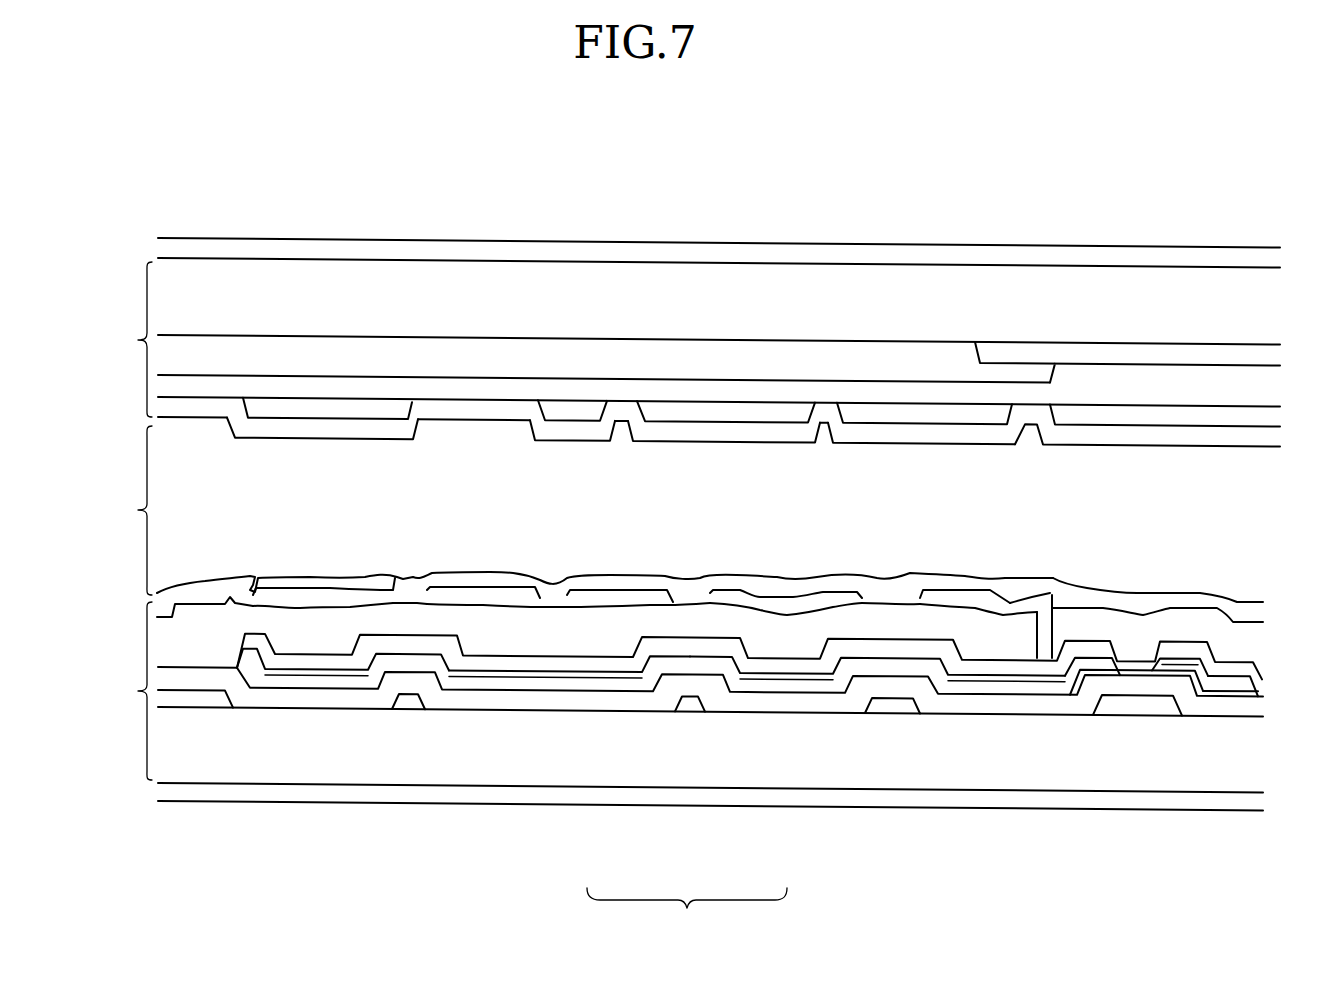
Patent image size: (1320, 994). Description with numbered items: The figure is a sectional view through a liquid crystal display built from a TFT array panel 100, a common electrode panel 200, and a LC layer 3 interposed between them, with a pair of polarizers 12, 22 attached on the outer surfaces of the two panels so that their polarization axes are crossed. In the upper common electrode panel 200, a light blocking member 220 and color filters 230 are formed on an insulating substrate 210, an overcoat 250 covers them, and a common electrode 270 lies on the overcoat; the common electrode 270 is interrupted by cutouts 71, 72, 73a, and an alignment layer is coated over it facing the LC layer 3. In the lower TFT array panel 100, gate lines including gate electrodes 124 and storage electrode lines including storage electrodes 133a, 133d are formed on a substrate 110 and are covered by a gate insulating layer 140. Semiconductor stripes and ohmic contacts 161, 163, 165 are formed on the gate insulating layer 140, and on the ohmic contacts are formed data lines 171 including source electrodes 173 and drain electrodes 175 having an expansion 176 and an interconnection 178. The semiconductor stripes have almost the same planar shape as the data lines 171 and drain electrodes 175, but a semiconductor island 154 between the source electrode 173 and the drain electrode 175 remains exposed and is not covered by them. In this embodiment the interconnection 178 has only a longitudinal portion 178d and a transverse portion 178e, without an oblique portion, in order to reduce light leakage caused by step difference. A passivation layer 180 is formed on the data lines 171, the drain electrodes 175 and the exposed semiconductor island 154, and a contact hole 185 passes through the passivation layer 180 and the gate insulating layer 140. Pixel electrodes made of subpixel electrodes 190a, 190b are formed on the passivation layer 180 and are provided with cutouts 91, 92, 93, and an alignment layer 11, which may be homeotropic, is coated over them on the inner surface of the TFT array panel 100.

The polarizer 22 is at (157, 246).
The common electrode panel 200 is at (685, 340).
The insulating substrate 210 is at (525, 300).
The light blocking member 220 is at (1028, 353).
The color filter 230 is at (275, 355).
The overcoat 250 is at (618, 387).
The common electrode 270 is at (402, 425).
The cutout 71 is at (425, 413).
The cutout 72 is at (243, 420).
The cutout 73a is at (1032, 428).
The LC layer 3 is at (696, 511).
The TFT array panel 100 is at (678, 677).
The polarizer 12 is at (157, 790).
The substrate 110 is at (972, 757).
The storage electrode 133a is at (208, 698).
The storage electrode 133d is at (410, 700).
The gate electrode 124 is at (1117, 700).
The gate insulating layer 140 is at (935, 700).
The expansion 176 is at (285, 660).
The interconnection 178 is at (687, 914).
The longitudinal portion 178d is at (778, 662).
The transverse portion 178e is at (582, 662).
The ohmic contact 165 is at (1030, 663).
The semiconductor island 154 is at (1072, 685).
The ohmic contact 161 is at (1222, 690).
The ohmic contact 163 is at (1175, 665).
The drain electrode 175 is at (1097, 648).
The source electrode 173 is at (1183, 650).
The data line 171 is at (1227, 665).
The passivation layer 180 is at (637, 630).
The contact hole 185 is at (1060, 600).
The subpixel electrode 190a is at (1022, 602).
The subpixel electrode 190b is at (335, 605).
The alignment layer 11 is at (485, 585).
The cutout 91 is at (568, 588).
The cutout 92 is at (418, 595).
The cutout 93 is at (250, 593).